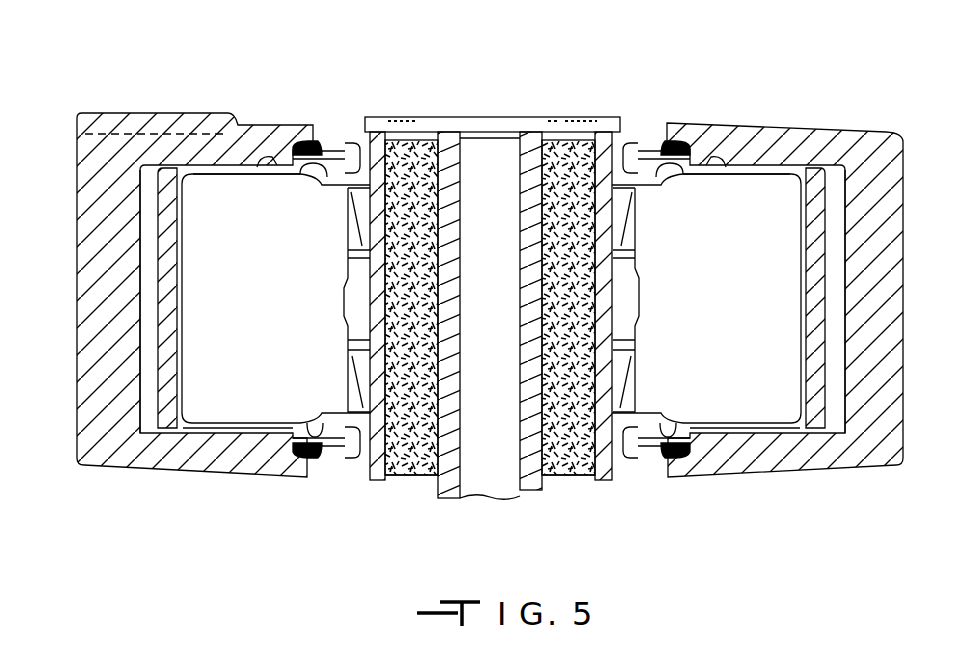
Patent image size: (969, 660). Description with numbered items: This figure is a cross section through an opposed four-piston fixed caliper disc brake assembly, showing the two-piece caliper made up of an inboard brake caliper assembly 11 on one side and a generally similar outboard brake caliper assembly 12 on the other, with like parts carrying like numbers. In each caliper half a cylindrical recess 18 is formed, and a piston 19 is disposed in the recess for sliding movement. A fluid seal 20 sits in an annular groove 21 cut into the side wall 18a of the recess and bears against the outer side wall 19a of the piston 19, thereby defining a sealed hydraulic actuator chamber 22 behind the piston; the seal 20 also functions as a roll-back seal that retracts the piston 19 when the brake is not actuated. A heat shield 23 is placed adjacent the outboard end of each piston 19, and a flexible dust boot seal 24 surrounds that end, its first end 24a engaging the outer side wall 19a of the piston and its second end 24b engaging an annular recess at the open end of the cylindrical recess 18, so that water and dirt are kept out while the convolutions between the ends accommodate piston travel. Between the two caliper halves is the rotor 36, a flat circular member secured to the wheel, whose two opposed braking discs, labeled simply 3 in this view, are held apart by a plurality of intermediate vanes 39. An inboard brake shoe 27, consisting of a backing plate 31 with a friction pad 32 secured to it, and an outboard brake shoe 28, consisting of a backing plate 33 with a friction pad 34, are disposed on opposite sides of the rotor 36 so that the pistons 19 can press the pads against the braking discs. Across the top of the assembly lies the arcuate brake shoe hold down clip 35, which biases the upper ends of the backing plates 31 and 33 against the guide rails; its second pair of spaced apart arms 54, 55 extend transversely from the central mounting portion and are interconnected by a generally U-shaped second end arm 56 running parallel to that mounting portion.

The inboard brake caliper assembly 11 is at (918, 176).
The outboard brake caliper assembly 12 is at (80, 340).
The hydraulic actuator chamber 22 is at (130, 246).
The cylindrical recess 18 is at (150, 462).
The side wall of cylindrical recess 18a is at (206, 177).
The piston 19 is at (185, 337).
The outer side wall of piston 19a is at (190, 436).
The fluid seal 20 is at (270, 449).
The annular groove 21 is at (270, 174).
The heat shield 23 is at (346, 300).
The dust boot seal 24 is at (340, 146).
The first end of dust boot seal 24a is at (328, 180).
The second end of dust boot seal 24b is at (316, 140).
The inboard brake shoe 27 is at (591, 487).
The outboard brake shoe 28 is at (392, 487).
The glass pane 3 is at (447, 500).
The backing plate of inboard brake shoe 31 is at (615, 481).
The friction pad of inboard brake shoe 32 is at (577, 485).
The backing plate of outboard brake shoe 33 is at (370, 475).
The friction pad of outboard brake shoe 34 is at (413, 485).
The brake shoe hold down clip 35 is at (487, 305).
The rotor 36 is at (497, 146).
The intermediate vanes 39 is at (492, 500).
The arm of second pair of spaced apart arms 54 is at (400, 117).
The arm of second pair of spaced apart arms 55 is at (585, 116).
The second end arm 56 is at (549, 115).